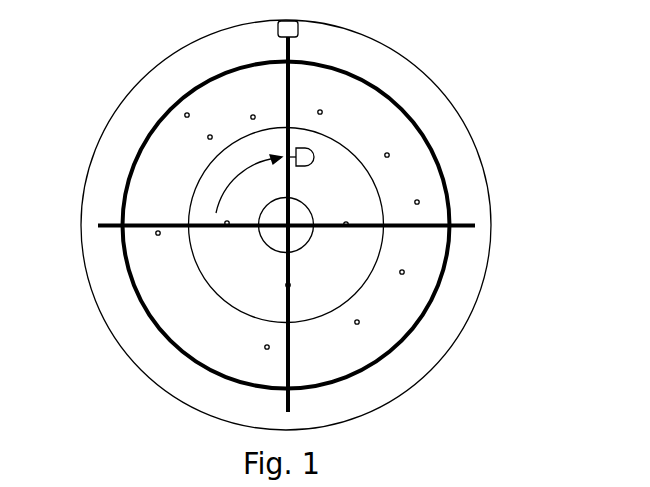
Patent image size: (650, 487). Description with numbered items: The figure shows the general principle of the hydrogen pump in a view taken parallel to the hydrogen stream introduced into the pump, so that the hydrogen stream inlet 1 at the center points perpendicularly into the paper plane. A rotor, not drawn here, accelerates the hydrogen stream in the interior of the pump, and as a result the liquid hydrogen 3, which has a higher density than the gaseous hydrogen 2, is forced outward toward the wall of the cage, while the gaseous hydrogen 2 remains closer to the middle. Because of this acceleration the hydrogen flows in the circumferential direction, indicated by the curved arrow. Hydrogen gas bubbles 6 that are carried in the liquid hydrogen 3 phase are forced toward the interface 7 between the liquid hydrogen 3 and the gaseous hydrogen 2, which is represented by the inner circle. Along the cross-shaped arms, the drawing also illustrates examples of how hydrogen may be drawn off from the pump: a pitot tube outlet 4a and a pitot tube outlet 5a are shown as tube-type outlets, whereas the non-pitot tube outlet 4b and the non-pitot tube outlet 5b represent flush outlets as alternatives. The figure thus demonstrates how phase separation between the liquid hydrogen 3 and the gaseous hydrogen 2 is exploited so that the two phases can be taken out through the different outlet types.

The hydrogen stream inlet 1 is at (302, 233).
The gaseous hydrogen 2 is at (364, 243).
The liquid hydrogen 3 is at (420, 97).
The pitot tube outlet 4a is at (420, 124).
The non-pitot tube outlet 4b is at (314, 156).
The pitot tube outlet 5a is at (372, 19).
The non-pitot tube outlet 5b is at (298, 32).
The hydrogen gas bubbles 6 is at (210, 137).
The interface 7 is at (380, 183).